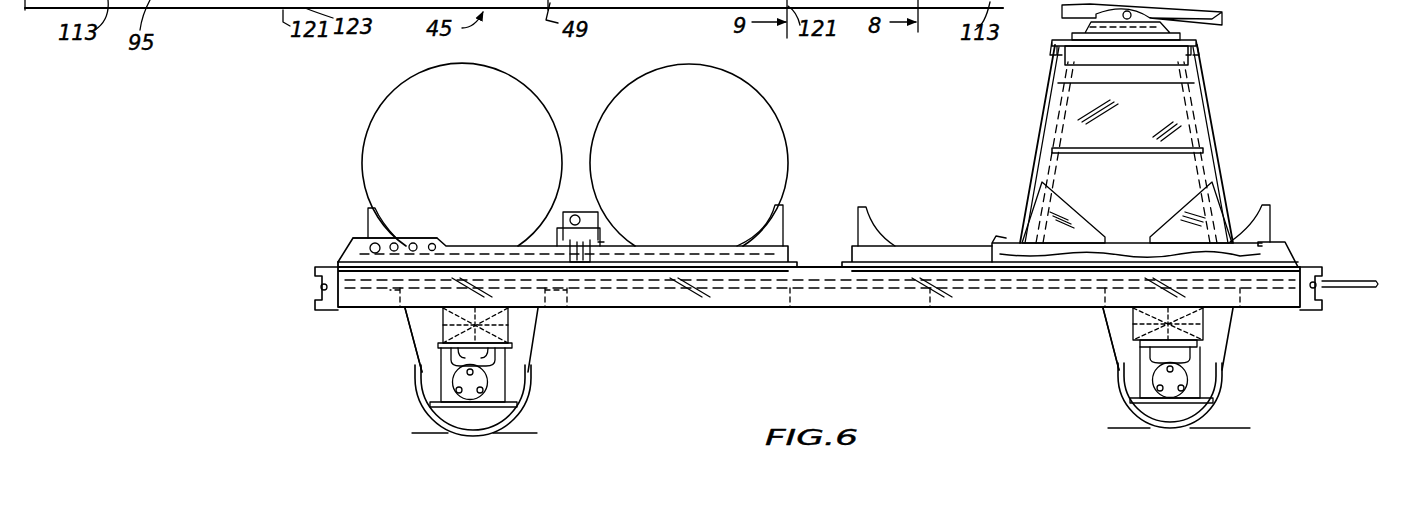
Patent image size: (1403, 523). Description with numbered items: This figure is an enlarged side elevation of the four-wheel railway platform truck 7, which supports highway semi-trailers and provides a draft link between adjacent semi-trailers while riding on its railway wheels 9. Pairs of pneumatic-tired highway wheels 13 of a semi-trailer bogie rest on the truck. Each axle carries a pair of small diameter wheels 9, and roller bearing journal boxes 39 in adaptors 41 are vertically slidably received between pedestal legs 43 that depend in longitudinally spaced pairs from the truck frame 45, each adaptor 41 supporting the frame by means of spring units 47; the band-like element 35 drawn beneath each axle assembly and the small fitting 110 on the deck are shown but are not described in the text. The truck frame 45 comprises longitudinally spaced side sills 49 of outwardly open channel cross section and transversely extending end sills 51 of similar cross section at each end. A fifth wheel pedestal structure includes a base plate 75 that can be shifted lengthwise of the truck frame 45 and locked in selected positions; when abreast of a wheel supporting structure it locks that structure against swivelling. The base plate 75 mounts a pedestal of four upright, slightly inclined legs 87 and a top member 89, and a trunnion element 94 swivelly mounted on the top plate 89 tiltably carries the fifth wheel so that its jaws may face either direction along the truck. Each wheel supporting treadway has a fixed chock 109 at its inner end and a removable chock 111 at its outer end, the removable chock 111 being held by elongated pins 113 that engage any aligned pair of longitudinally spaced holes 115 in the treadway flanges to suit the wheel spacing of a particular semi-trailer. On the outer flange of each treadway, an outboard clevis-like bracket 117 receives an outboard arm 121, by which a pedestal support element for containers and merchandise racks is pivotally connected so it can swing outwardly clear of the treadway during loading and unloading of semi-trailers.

The railway platform truck 7 is at (340, 248).
The wheels 9 is at (418, 405).
The pneumatic-tired highway wheels 13 is at (376, 100).
The U-shaped band 35 is at (527, 405).
The roller bearing journal boxes 39 is at (498, 380).
The adaptors 41 is at (448, 385).
The pedestal legs 43 is at (440, 340).
The truck frame 45 is at (779, 308).
The spring units 47 is at (505, 345).
The side sills 49 is at (813, 267).
The end sills 51 is at (322, 268).
The base plate 75 is at (1013, 240).
The legs 87 is at (1048, 107).
The top member 89 is at (1198, 44).
The trunnion element 94 is at (1100, 18).
The fixed chock 109 is at (765, 224).
The valve box 110 is at (563, 216).
The removable chock 111 is at (367, 220).
The elongated pins 113 is at (368, 247).
The holes 115 is at (377, 244).
The clevis-like bracket 117 is at (592, 251).
The outboard arm 121 is at (600, 242).